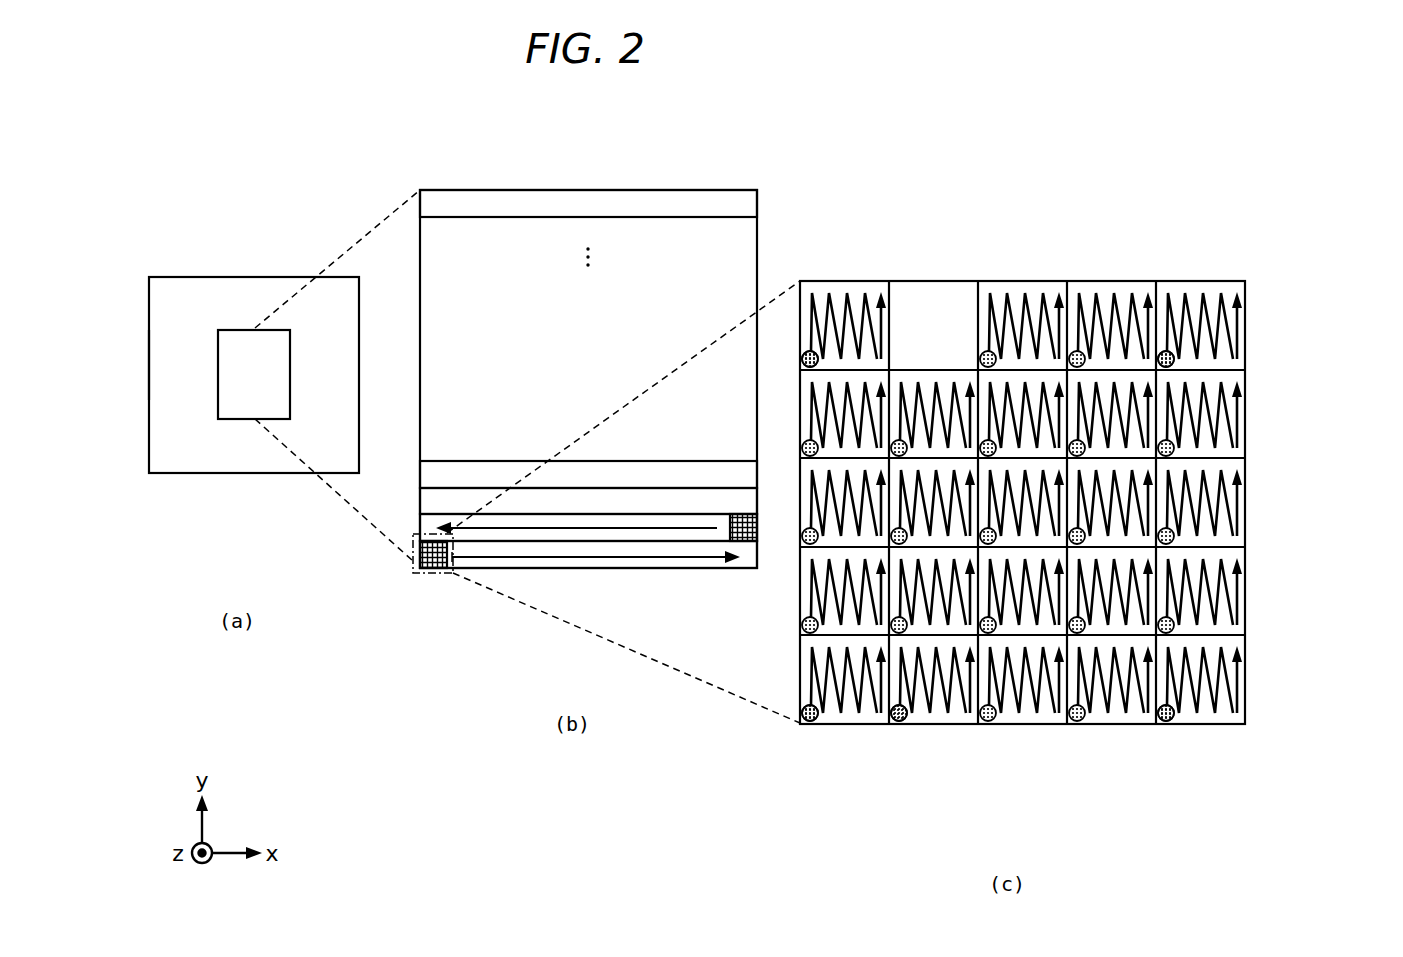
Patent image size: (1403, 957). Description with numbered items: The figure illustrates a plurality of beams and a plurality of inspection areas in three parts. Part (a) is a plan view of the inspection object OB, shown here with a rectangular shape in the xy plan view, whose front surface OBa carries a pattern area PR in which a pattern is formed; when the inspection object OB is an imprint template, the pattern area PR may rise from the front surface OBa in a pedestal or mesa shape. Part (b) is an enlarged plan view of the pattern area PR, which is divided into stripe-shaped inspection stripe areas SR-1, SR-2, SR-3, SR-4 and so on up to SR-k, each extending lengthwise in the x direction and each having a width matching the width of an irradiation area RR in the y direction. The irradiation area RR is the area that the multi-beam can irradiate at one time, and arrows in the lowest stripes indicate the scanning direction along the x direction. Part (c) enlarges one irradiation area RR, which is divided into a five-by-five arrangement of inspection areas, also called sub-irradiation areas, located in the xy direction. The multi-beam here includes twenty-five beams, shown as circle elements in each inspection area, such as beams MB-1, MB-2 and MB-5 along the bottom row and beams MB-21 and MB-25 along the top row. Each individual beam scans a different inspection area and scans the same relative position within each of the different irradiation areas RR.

The inspection object OB is at (161, 501).
The front surface OBa is at (159, 363).
The pattern area PR is at (240, 335).
The inspection stripe area SR-k is at (693, 198).
The inspection stripe area SR-4 is at (470, 467).
The inspection stripe area SR-3 is at (680, 500).
The inspection stripe area SR-2 is at (698, 535).
The inspection stripe area SR-1 is at (605, 565).
The irradiation area RR is at (418, 575).
The beam MB-21 is at (803, 356).
The beam MB-25 is at (1169, 366).
The beam MB-1 is at (808, 725).
The beam MB-2 is at (897, 725).
The beam MB-5 is at (1163, 725).